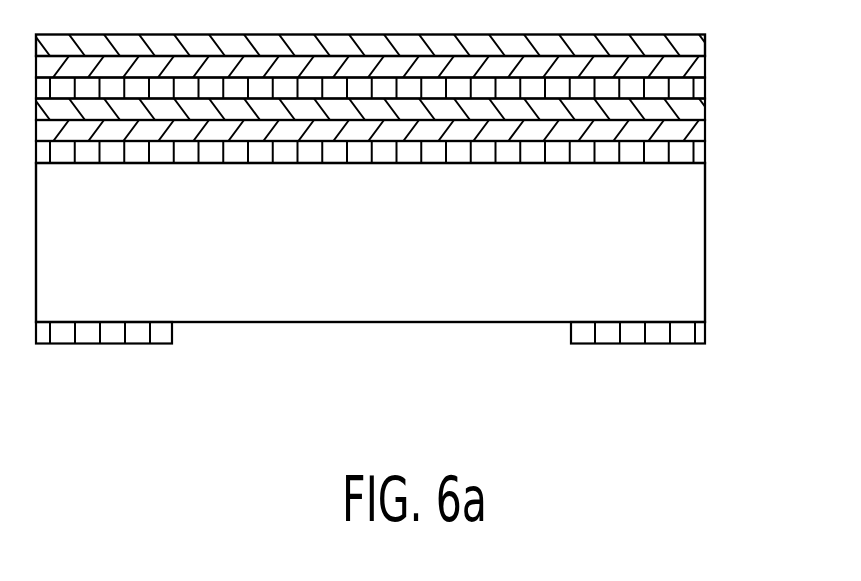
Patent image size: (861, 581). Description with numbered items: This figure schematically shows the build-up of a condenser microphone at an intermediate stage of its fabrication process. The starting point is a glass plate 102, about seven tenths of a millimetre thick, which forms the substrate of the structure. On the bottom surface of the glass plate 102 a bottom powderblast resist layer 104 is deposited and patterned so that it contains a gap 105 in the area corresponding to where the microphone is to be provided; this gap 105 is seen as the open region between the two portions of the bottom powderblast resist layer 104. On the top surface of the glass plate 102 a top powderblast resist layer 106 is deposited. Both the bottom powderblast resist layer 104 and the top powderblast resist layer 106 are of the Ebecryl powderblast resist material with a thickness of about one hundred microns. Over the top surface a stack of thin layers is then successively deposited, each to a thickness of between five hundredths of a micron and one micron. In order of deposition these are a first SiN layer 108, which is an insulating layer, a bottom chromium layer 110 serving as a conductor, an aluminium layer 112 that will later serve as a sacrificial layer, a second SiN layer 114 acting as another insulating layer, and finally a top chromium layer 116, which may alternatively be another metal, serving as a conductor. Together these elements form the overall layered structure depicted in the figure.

The glass plate 102 is at (691, 240).
The bottom powderblast resist layer 104 is at (692, 335).
The gap 105 is at (446, 338).
The top powderblast resist layer 106 is at (692, 153).
The first SiN layer 108 is at (692, 133).
The bottom chromium layer 110 is at (692, 113).
The aluminium layer 112 is at (692, 88).
The second SiN layer 114 is at (692, 70).
The top chromium layer 116 is at (693, 47).